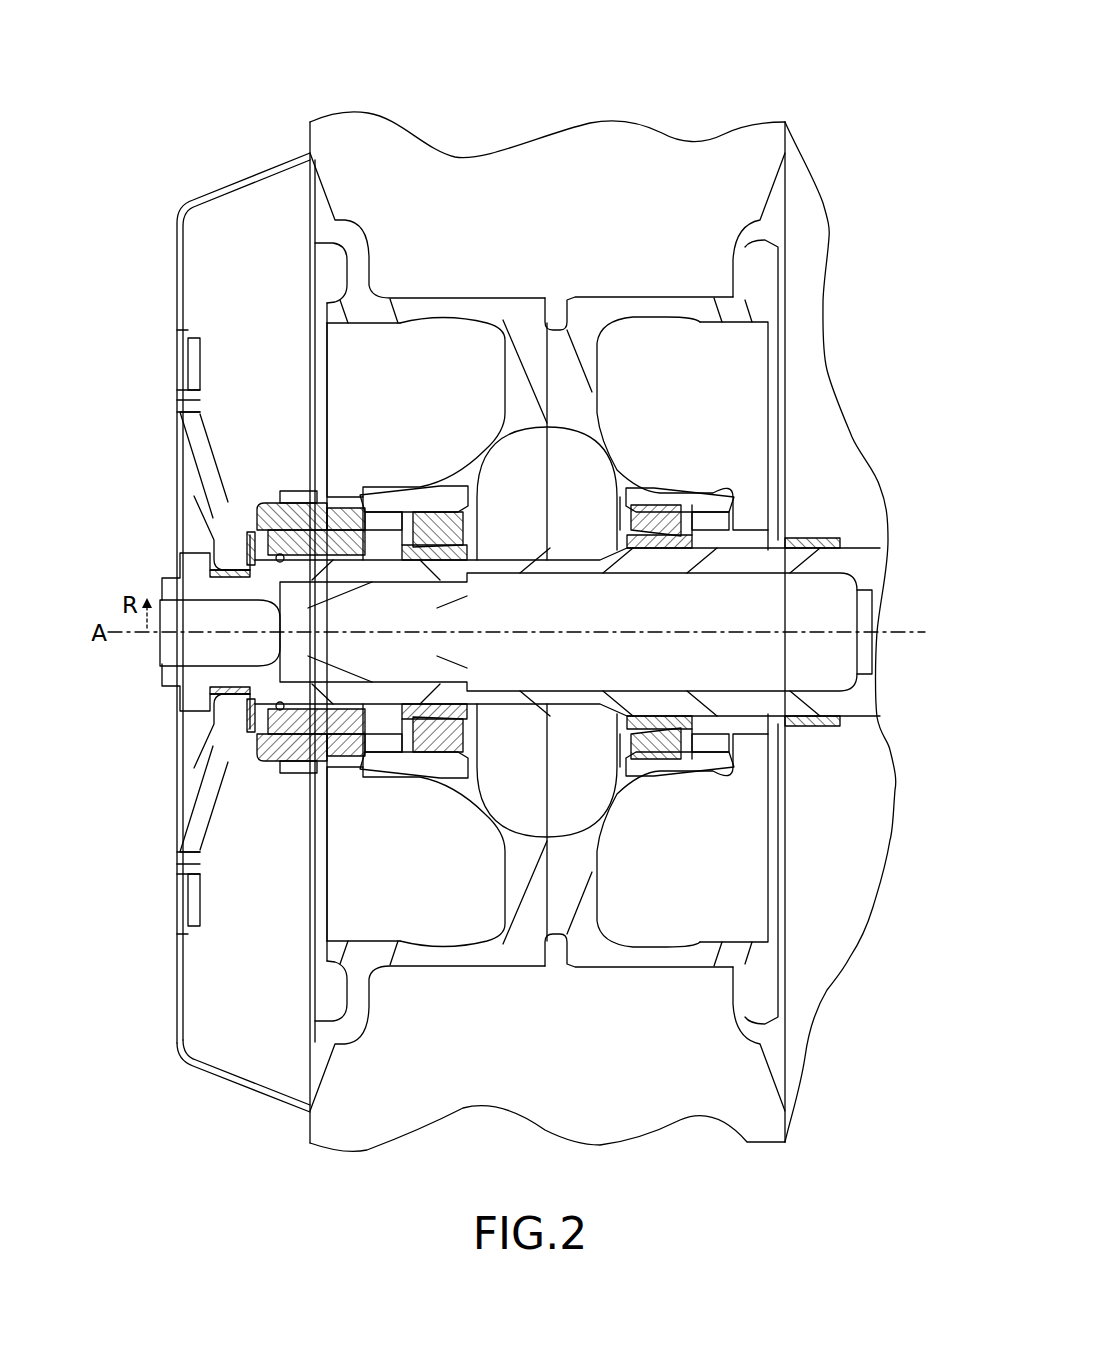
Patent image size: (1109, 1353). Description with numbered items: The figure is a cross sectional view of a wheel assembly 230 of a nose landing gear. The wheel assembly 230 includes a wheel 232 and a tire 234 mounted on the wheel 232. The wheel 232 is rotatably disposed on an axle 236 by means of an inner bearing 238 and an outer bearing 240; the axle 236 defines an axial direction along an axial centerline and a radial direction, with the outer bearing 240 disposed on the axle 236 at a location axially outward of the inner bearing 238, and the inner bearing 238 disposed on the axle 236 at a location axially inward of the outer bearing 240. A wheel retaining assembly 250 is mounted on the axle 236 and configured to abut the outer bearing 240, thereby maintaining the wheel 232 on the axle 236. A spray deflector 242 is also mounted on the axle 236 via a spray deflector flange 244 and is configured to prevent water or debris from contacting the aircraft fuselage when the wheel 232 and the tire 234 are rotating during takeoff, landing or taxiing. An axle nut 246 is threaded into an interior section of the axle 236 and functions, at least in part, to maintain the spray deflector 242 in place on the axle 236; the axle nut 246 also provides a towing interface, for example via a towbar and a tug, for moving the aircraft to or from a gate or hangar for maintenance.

The wheel assembly 230 is at (197, 160).
The wheel 232 is at (727, 300).
The tire 234 is at (746, 147).
The axle 236 is at (867, 562).
The inner bearing 238 is at (660, 523).
The outer bearing 240 is at (420, 523).
The spray deflector 242 is at (222, 263).
The spray deflector flange 244 is at (200, 446).
The axle nut 246 is at (176, 590).
The wheel retaining assembly 250 is at (290, 468).